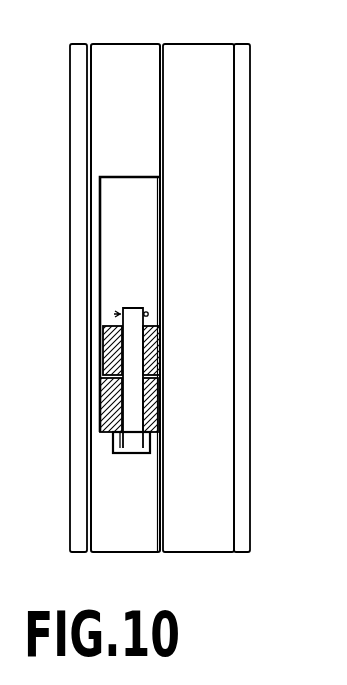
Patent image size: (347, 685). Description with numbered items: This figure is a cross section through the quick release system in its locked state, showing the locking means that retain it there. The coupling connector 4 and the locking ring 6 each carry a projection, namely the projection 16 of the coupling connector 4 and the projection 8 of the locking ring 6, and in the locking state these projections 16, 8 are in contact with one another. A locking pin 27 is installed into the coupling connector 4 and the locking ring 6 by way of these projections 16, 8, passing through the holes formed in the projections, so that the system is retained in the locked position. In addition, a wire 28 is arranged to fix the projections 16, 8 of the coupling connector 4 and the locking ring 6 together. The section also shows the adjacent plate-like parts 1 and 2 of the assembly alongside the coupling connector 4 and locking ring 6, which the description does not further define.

The first plate 1 is at (80, 72).
The coupling connector 4 is at (115, 120).
The locking ring 6 is at (197, 333).
The frame plate 2 is at (252, 431).
The projection 8 is at (100, 340).
The projection 16 is at (113, 399).
The locking pin 27 is at (128, 438).
The wire 28 is at (149, 313).